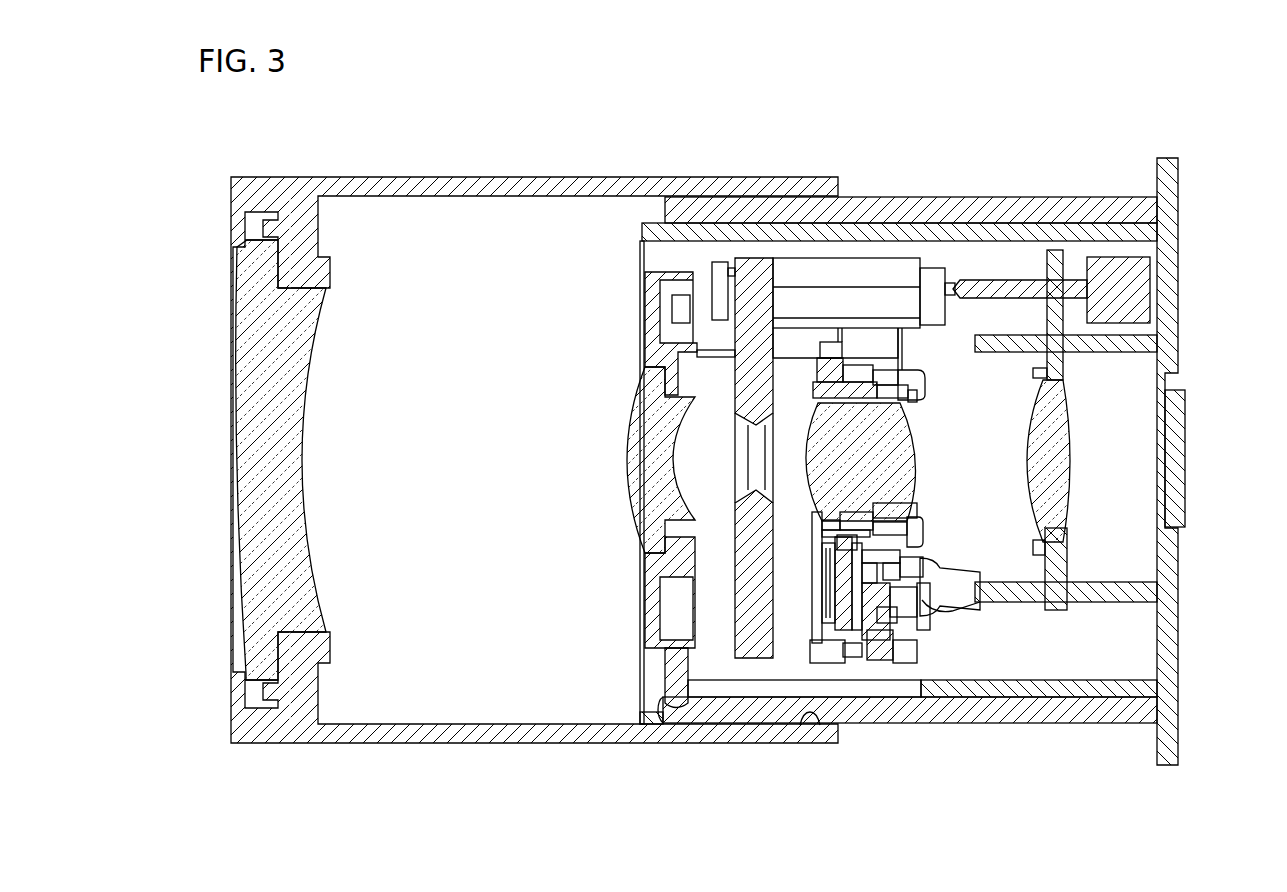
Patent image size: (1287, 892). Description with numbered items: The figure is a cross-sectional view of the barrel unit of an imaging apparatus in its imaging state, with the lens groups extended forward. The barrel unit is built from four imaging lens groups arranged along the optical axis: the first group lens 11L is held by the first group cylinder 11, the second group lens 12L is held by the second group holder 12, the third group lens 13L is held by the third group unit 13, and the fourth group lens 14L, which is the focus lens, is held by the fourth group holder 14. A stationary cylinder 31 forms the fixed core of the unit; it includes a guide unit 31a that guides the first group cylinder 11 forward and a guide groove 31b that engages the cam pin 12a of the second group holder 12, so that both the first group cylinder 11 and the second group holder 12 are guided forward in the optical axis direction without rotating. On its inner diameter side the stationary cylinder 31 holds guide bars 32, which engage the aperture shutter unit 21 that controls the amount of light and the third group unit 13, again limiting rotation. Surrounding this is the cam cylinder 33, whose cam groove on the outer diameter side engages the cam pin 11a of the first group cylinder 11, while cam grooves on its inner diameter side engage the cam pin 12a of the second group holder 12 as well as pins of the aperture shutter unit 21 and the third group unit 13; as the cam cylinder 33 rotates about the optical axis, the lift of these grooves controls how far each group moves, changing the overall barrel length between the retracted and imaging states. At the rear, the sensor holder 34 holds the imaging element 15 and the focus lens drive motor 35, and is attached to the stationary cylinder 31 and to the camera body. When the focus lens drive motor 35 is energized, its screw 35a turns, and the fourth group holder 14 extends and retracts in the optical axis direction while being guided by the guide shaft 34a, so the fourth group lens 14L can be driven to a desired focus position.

The first group cylinder 11 is at (303, 197).
The first group lens 11L is at (256, 492).
The cam pin 11a is at (810, 725).
The second group holder 12 is at (651, 270).
The second group lens 12L is at (637, 453).
The cam pin 12a is at (685, 700).
The third group unit 13 is at (862, 637).
The third group lens 13L is at (903, 455).
The fourth group holder 14 is at (1055, 258).
The fourth group lens 14L is at (1063, 465).
The imaging element 15 is at (1182, 447).
The aperture shutter unit 21 is at (758, 283).
The stationary cylinder 31 is at (846, 222).
The guide unit 31a is at (653, 745).
The guide groove 31b is at (738, 690).
The guide bar 32 is at (724, 295).
The cam cylinder 33 is at (929, 208).
The sensor holder 34 is at (1163, 322).
The guide shaft 34a is at (1096, 352).
The focus lens drive motor 35 is at (1158, 284).
The screw 35a is at (1008, 283).